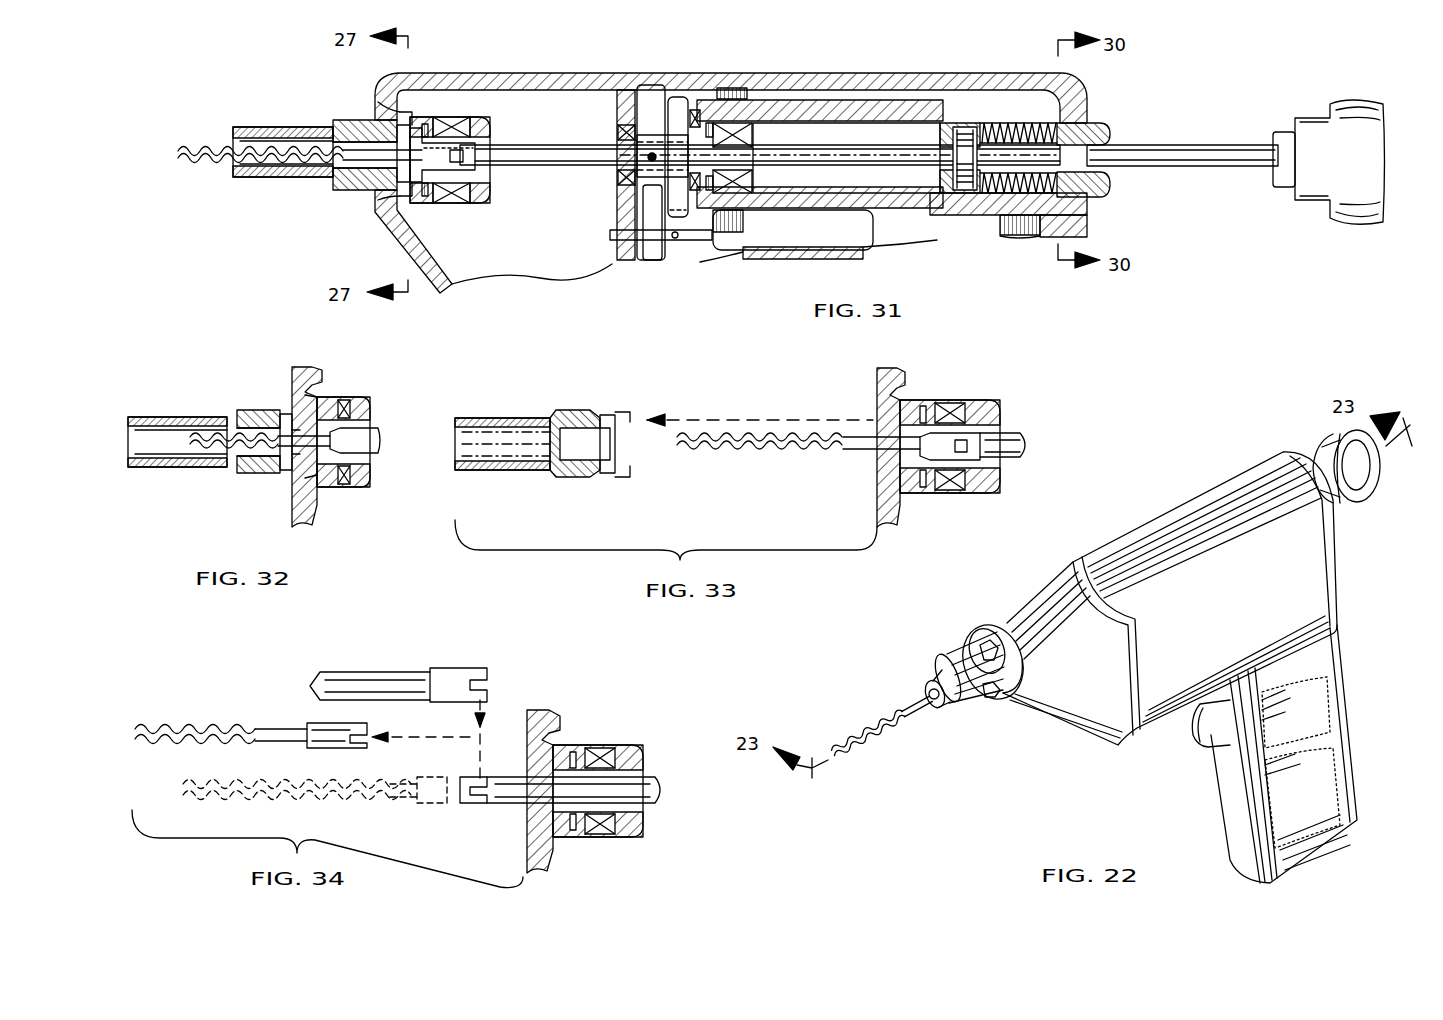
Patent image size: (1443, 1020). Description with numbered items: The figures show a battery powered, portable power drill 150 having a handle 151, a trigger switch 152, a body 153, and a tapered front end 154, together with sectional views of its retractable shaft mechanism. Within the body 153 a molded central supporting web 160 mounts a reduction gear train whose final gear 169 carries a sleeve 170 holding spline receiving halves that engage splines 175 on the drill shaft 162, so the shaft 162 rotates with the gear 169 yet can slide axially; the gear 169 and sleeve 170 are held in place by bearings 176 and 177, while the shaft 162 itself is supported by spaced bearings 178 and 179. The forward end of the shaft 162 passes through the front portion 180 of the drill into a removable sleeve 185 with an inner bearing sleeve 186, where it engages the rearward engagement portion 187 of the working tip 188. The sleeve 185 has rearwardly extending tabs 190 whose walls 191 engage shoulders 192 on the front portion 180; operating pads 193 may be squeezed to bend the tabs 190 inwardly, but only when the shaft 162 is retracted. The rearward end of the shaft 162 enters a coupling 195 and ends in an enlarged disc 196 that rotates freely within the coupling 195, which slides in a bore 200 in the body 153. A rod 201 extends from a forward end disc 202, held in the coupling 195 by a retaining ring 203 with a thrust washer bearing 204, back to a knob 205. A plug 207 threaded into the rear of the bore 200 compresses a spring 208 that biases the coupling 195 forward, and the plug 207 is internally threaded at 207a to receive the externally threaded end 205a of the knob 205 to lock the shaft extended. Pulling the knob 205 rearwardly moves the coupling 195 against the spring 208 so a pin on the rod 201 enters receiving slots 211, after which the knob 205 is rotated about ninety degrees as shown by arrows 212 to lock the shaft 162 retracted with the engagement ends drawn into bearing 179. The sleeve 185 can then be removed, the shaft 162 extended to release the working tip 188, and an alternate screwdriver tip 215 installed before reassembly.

In FIG. 22, the power drill 150 is at (1230, 465).
In FIG. 22, the handle 151 is at (1350, 735).
In FIG. 22, the trigger switch 152 is at (1196, 732).
In FIG. 22, the body 153 is at (1185, 510).
In FIG. 22, the tapered front end 154 is at (1067, 724).
In FIG. 31, the central supporting web 160 is at (617, 210).
In FIG. 31, the drill shaft 162 is at (570, 166).
In FIG. 33, the drill shaft 162 is at (1020, 433).
In FIG. 34, the drill shaft 162 is at (505, 803).
In FIG. 31, the gear 169 is at (678, 98).
In FIG. 31, the sleeve 170 is at (648, 128).
In FIG. 31, the splines 175 is at (800, 140).
In FIG. 31, the bearing 176 is at (622, 128).
In FIG. 31, the bearing 177 is at (722, 124).
In FIG. 31, the bearing 178 is at (735, 110).
In FIG. 31, the bearing 179 is at (490, 120).
In FIG. 32, the bearing 179 is at (370, 400).
In FIG. 33, the bearing 179 is at (975, 400).
In FIG. 34, the bearing 179 is at (608, 748).
In FIG. 31, the front portion 180 is at (435, 290).
In FIG. 32, the front portion 180 is at (310, 366).
In FIG. 33, the front portion 180 is at (877, 385).
In FIG. 34, the front portion 180 is at (555, 710).
In FIG. 22, the front portion 180 is at (980, 638).
In FIG. 31, the sleeve 185 is at (270, 127).
In FIG. 32, the sleeve 185 is at (168, 417).
In FIG. 33, the sleeve 185 is at (510, 418).
In FIG. 22, the sleeve 185 is at (947, 677).
In FIG. 31, the inner bearing sleeve 186 is at (240, 166).
In FIG. 31, the rearward engagement portion 187 is at (448, 172).
In FIG. 32, the rearward engagement portion 187 is at (380, 440).
In FIG. 33, the rearward engagement portion 187 is at (948, 435).
In FIG. 34, the rearward engagement portion 187 is at (325, 723).
In FIG. 31, the working tip 188 is at (205, 148).
In FIG. 32, the working tip 188 is at (222, 425).
In FIG. 33, the working tip 188 is at (772, 452).
In FIG. 34, the working tip 188 is at (172, 735).
In FIG. 22, the working tip 188 is at (890, 717).
In FIG. 31, the tabs 190 is at (395, 126).
In FIG. 32, the tabs 190 is at (286, 414).
In FIG. 33, the tabs 190 is at (606, 415).
In FIG. 31, the walls 191 is at (407, 120).
In FIG. 32, the walls 191 is at (300, 458).
In FIG. 33, the walls 191 is at (630, 412).
In FIG. 31, the shoulders 192 is at (382, 100).
In FIG. 32, the shoulders 192 is at (320, 397).
In FIG. 31, the operating pads 193 is at (345, 120).
In FIG. 32, the operating pads 193 is at (262, 410).
In FIG. 33, the operating pads 193 is at (580, 410).
In FIG. 22, the operating pads 193 is at (977, 645).
In FIG. 31, the coupling 195 is at (960, 125).
In FIG. 31, the enlarged disc 196 is at (962, 190).
In FIG. 31, the bore 200 is at (878, 130).
In FIG. 31, the rod 201 is at (1218, 146).
In FIG. 31, the forward end disc 202 is at (1000, 125).
In FIG. 31, the retaining ring 203 is at (985, 160).
In FIG. 31, the thrust washer bearing 204 is at (970, 150).
In FIG. 31, the knob 205 is at (1345, 106).
In FIG. 22, the knob 205 is at (1320, 440).
In FIG. 31, the external threads 205a is at (1284, 188).
In FIG. 31, the plug 207 is at (1110, 186).
In FIG. 31, the internal threads 207a is at (1112, 136).
In FIG. 31, the spring 208 is at (1085, 82).
In FIG. 31, the receiving slots 211 is at (1078, 104).
In FIG. 31, the arrows 212 is at (1088, 225).
In FIG. 34, the screwdriver tip 215 is at (365, 672).